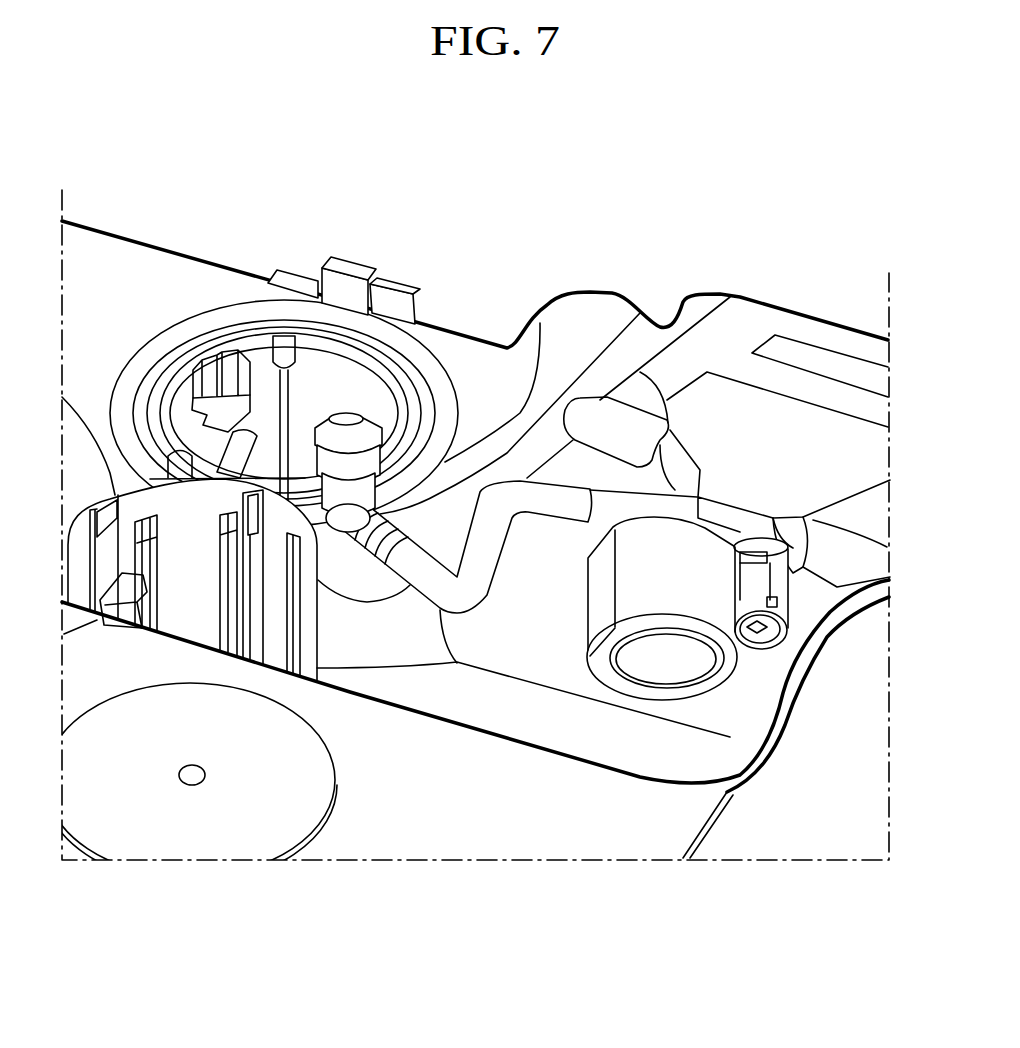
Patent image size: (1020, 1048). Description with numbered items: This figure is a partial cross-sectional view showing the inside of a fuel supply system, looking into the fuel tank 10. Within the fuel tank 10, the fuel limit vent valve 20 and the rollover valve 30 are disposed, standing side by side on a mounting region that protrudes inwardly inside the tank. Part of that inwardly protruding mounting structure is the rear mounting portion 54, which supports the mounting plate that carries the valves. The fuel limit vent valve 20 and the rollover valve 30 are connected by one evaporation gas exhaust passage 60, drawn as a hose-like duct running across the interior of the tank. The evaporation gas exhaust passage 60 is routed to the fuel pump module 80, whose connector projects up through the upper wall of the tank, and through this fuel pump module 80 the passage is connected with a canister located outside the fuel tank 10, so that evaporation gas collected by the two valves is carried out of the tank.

The fuel tank 10 is at (770, 290).
The fuel limit vent valve 20 is at (698, 722).
The rollover valve 30 is at (767, 680).
The rear mounting portion 54 is at (838, 558).
The evaporation gas exhaust passage 60 is at (543, 497).
The fuel pump module 80 is at (395, 255).